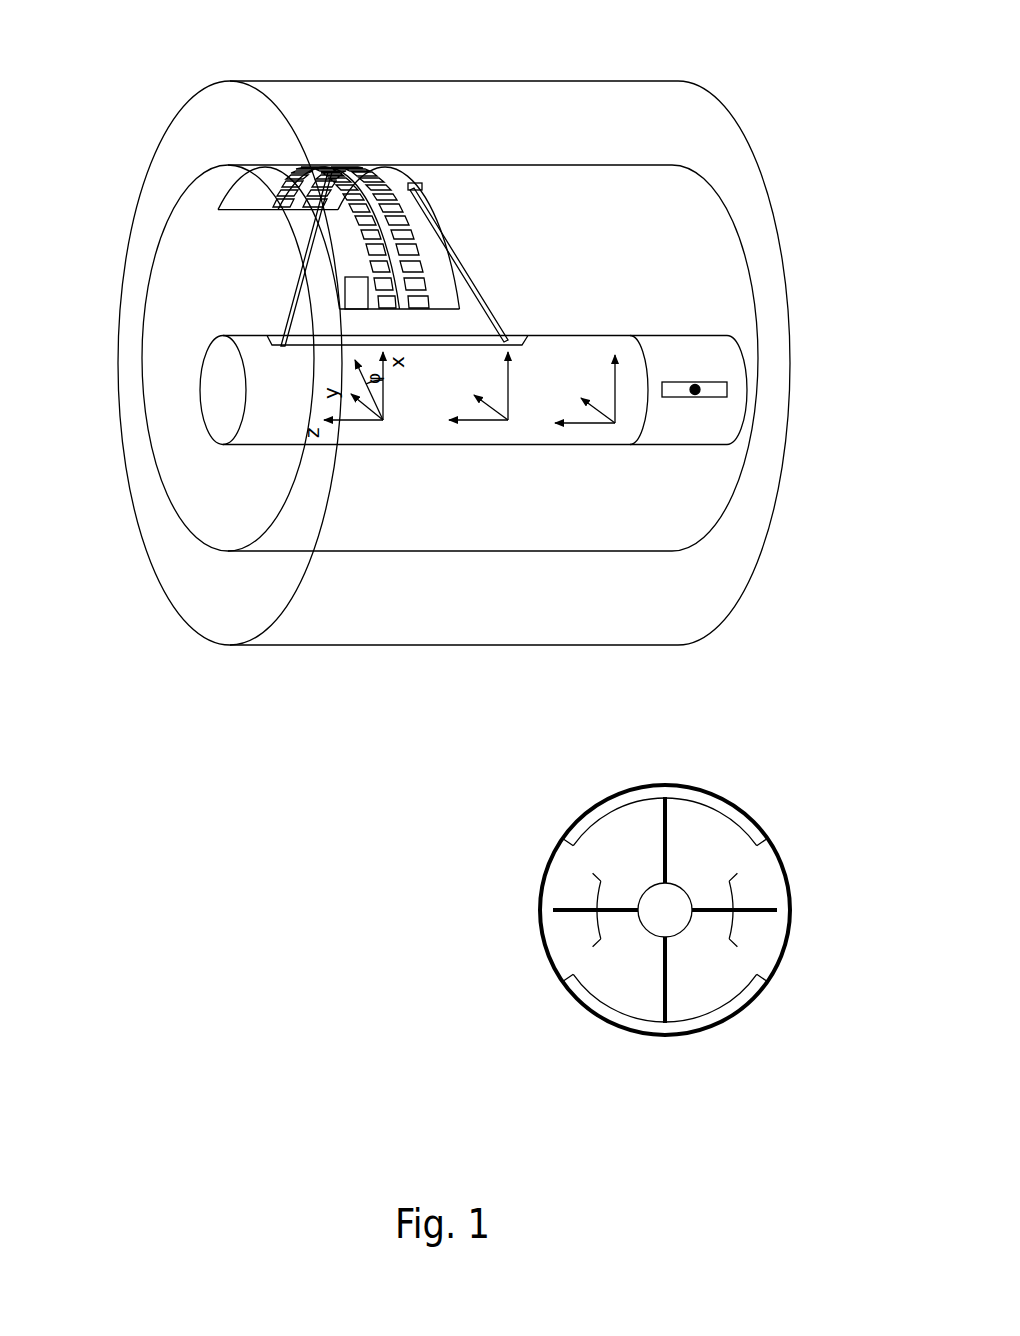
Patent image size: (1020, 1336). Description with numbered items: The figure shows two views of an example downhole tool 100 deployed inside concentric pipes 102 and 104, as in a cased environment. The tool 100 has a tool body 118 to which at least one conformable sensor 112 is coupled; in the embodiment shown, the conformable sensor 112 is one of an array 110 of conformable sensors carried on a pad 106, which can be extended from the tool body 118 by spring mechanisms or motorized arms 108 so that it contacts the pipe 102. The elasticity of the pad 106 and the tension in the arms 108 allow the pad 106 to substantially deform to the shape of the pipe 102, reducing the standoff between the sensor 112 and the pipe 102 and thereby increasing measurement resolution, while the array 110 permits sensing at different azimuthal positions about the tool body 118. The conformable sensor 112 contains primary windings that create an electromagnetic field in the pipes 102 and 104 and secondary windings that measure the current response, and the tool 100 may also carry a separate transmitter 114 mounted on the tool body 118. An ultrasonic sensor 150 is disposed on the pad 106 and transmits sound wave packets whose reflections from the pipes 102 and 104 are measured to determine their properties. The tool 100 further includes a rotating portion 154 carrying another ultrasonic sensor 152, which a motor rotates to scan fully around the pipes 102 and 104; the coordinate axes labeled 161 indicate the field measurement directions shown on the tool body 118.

The downhole tool 100 is at (220, 445).
The pipe 102 is at (124, 278).
The pipe 104 is at (772, 207).
The pad 106 is at (257, 165).
The arms 108 is at (665, 990).
The array of conformable sensors 110 is at (415, 183).
The conformable sensor 112 is at (392, 298).
The transmitter 114 is at (467, 423).
The tool body 118 is at (200, 403).
The ultrasonic sensor 150 is at (358, 285).
The ultrasonic sensor 152 is at (727, 389).
The rotating portion 154 is at (725, 445).
The sensor coordinate system 161 is at (550, 433).